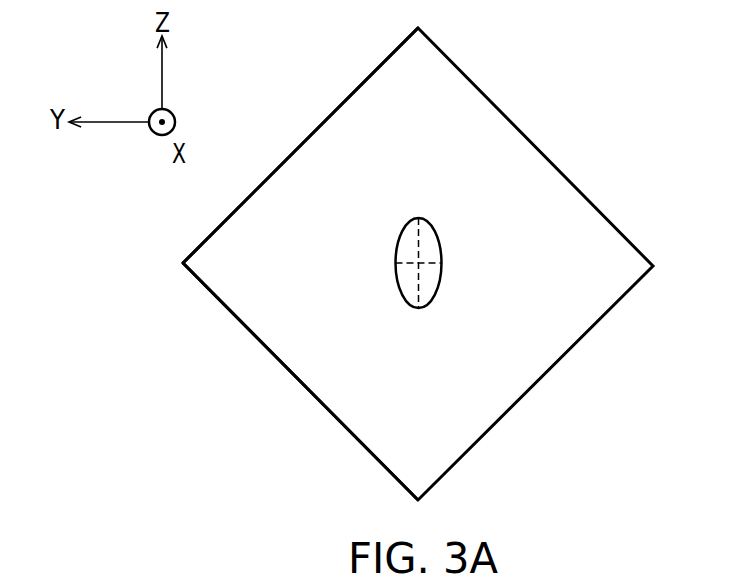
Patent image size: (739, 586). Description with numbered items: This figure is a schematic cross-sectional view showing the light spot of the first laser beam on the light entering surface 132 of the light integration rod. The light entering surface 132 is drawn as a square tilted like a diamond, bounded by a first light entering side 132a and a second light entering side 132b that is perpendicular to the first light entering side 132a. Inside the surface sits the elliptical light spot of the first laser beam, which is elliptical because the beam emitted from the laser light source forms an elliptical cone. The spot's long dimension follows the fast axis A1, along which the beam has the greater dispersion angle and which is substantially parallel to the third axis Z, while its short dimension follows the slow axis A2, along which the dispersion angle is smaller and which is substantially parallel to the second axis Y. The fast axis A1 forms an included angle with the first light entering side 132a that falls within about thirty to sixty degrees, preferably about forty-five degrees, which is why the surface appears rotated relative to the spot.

The light entering surface 132 is at (372, 143).
The first light entering side 132a is at (291, 153).
The second light entering side 132b is at (290, 373).
The fast axis A1 is at (418, 248).
The slow axis A2 is at (427, 265).